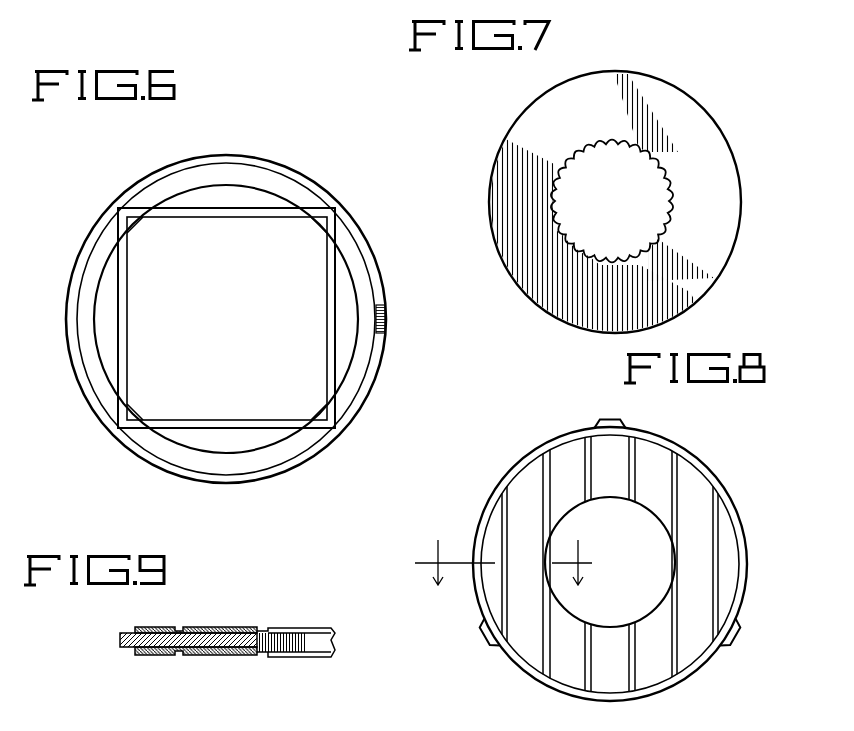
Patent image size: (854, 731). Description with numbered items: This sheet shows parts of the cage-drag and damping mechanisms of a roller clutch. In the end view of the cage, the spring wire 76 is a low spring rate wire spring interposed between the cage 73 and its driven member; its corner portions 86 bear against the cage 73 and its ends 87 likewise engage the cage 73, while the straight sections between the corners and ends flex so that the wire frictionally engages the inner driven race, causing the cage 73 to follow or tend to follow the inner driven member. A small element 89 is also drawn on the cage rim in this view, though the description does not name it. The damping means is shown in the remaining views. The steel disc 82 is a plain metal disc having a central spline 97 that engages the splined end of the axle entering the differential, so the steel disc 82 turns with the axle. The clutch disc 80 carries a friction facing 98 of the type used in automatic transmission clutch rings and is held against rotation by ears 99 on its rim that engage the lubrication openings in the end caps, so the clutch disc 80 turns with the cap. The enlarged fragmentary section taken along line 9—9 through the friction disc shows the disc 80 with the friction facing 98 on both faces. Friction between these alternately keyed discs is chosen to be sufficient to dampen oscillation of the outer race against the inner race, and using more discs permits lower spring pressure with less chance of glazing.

In FIG. 6, the cage 73 is at (278, 170).
In FIG. 6, the spring wire 76 is at (262, 218).
In FIG. 6, the corner portions 86 is at (133, 222).
In FIG. 6, the ends 87 is at (133, 417).
In FIG. 6, the insert 89 is at (387, 328).
In FIG. 7, the steel disc 82 is at (688, 108).
In FIG. 7, the spline 97 is at (662, 167).
In FIG. 8, the clutch disc 80 is at (660, 472).
In FIG. 9, the clutch disc 80 is at (218, 627).
In FIG. 8, the friction facing 98 is at (531, 477).
In FIG. 9, the friction facing 98 is at (160, 627).
In FIG. 8, the ears 99 is at (612, 419).
In FIG. 8, the line 9— 9 is at (510, 557).